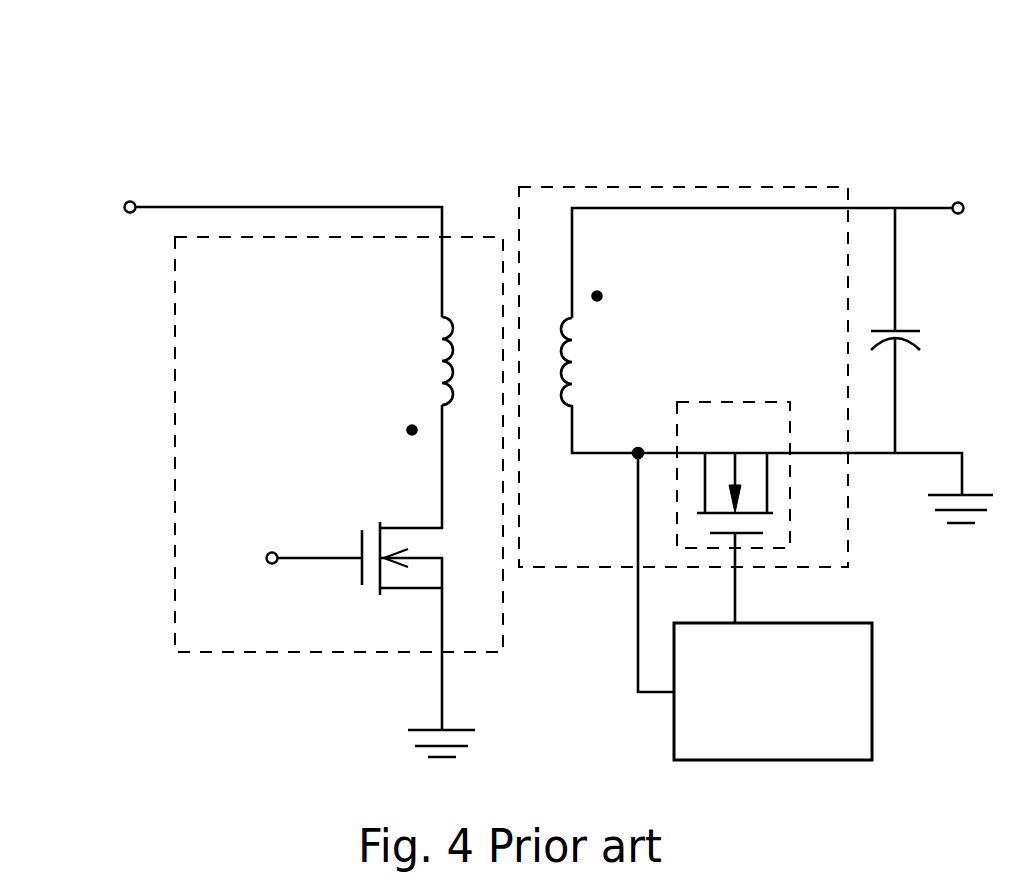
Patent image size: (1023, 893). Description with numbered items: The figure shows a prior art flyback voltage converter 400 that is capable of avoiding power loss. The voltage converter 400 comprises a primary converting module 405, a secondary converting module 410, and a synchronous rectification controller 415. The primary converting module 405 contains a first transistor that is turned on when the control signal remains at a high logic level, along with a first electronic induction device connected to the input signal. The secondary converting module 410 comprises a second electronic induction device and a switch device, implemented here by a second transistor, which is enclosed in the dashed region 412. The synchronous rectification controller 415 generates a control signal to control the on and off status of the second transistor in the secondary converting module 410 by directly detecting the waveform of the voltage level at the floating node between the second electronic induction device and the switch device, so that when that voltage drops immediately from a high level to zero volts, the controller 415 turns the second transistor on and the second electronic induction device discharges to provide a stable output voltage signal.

The flyback voltage converter 400 is at (860, 68).
The primary converting module 405 is at (213, 655).
The secondary converting module 410 is at (767, 186).
The synchronous rectifier switch Q2 412 is at (735, 400).
The synchronous rectification controller 415 is at (834, 622).